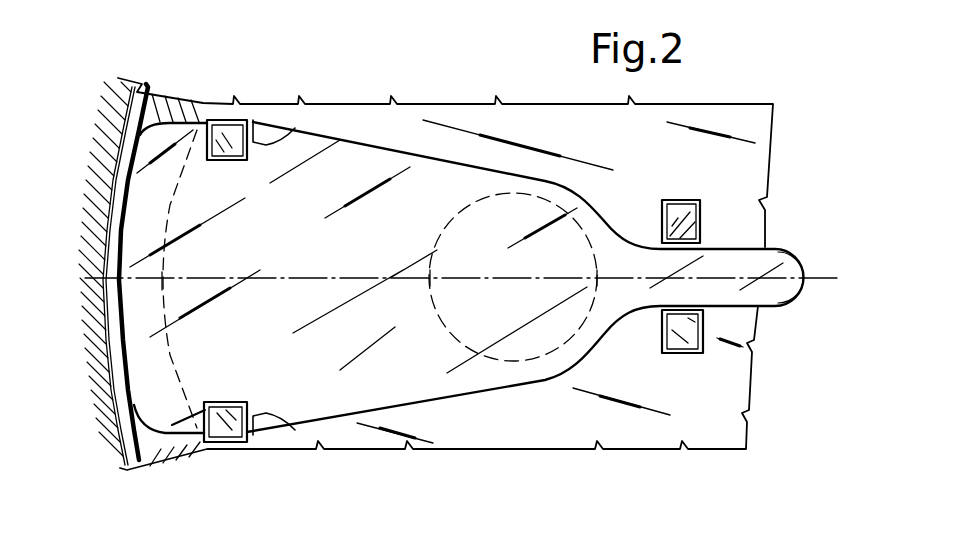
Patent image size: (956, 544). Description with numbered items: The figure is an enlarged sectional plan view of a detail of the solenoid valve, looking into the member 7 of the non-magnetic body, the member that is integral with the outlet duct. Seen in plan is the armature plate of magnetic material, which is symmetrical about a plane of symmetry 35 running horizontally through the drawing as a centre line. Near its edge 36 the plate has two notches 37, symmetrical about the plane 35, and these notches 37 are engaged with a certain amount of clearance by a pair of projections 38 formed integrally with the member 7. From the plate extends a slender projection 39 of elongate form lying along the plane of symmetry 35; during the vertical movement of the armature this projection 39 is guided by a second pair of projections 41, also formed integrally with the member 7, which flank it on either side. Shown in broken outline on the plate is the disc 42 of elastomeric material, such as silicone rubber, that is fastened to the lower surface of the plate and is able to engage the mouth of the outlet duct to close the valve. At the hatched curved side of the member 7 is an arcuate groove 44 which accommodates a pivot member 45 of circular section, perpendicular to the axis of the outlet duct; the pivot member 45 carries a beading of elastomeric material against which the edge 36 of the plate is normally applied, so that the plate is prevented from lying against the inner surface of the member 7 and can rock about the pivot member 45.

The member 7 is at (499, 440).
The plane of symmetry 35 is at (820, 278).
The edge 36 is at (135, 306).
The notches 37 is at (292, 130).
The projections 38 is at (228, 137).
The slender projection 39 is at (733, 258).
The second pair of projections 41 is at (670, 210).
The disc 42 is at (541, 362).
The arcuate groove 44 is at (183, 112).
The pivot member 45 is at (168, 462).